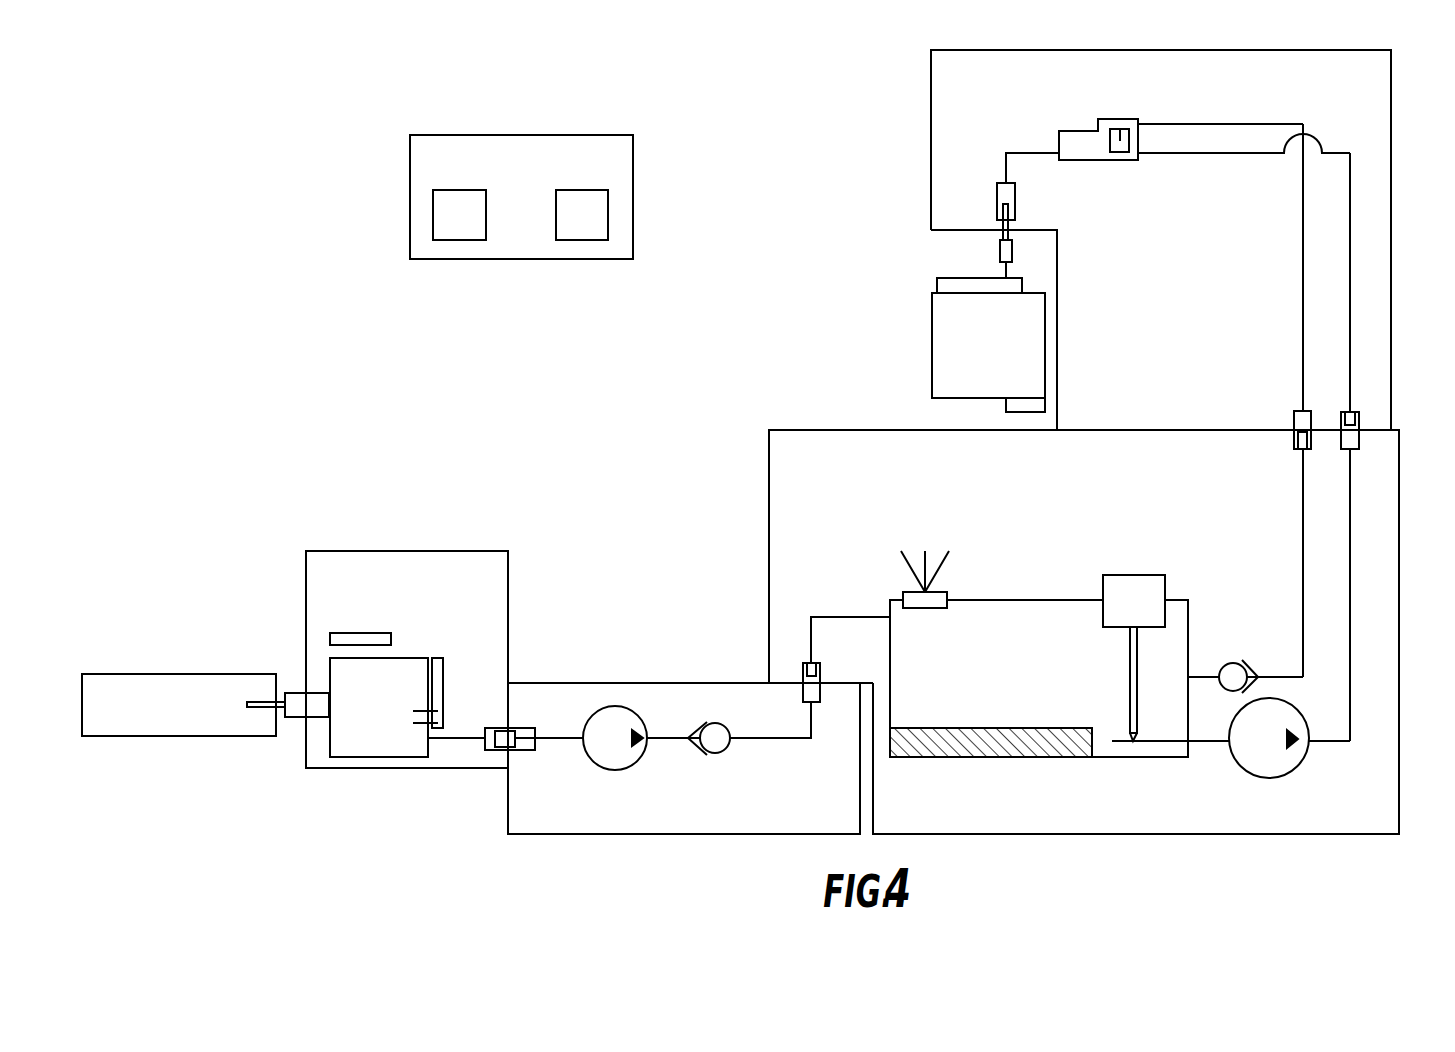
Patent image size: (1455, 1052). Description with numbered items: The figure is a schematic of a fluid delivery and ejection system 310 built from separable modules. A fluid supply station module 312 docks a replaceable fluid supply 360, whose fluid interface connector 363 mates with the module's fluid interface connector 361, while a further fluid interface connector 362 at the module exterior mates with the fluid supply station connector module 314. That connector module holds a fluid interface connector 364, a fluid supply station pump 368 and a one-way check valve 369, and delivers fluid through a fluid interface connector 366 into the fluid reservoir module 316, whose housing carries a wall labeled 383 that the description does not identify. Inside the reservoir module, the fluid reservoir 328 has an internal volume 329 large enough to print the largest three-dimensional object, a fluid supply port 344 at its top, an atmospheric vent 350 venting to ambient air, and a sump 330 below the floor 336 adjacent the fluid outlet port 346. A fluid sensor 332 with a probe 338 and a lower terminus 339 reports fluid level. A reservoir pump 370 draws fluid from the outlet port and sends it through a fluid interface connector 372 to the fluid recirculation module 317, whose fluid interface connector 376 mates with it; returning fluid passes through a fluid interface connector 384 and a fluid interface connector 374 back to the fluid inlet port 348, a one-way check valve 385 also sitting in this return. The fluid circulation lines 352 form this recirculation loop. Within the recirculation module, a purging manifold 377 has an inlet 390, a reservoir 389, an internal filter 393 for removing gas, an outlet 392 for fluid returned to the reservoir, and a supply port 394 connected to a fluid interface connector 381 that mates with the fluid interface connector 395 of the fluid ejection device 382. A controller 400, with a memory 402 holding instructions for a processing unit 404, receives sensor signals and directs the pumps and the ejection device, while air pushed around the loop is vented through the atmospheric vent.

The fluid delivery and ejection system 310 is at (140, 134).
The fluid supply station module 312 is at (407, 616).
The fluid supply station connector module 314 is at (690, 714).
The fluid reservoir module 316 is at (1074, 603).
The fluid recirculation module 317 is at (1161, 215).
The fluid reservoir 328 is at (1039, 628).
The internal volume 329 is at (1010, 594).
The sump 330 is at (1075, 706).
The fluid sensor 332 is at (1134, 563).
The floor 336 is at (991, 759).
The probe 338 is at (1091, 684).
The lower terminus 339 is at (1138, 780).
The fluid supply port 344 is at (892, 578).
The fluid outlet port 346 is at (1190, 784).
The fluid inlet port 348 is at (1210, 632).
The atmospheric vent 350 is at (945, 549).
The fluid circulation lines 352 is at (1287, 432).
The fluid supply 360 is at (183, 668).
The fluid interface connector 361 is at (290, 771).
The fluid interface connector 362 is at (473, 771).
The fluid interface connector 363 is at (266, 739).
The fluid interface connector 364 is at (551, 780).
The fluid interface connector 366 is at (852, 695).
The fluid supply station pump 368 is at (668, 719).
The one-way check valve 369 is at (749, 761).
The reservoir pump 370 is at (1279, 755).
The fluid interface connector 372 is at (1373, 482).
The fluid interface connector 374 is at (1244, 465).
The fluid interface connector 376 is at (1397, 408).
The purging manifold 377 is at (1137, 213).
The fluid interface connector 381 is at (943, 195).
The fluid ejection device 382 is at (944, 345).
The module wall 383 is at (735, 488).
The fluid interface connector 384 is at (1265, 400).
The one-way check valve 385 is at (1319, 371).
The reservoir 389 is at (1084, 114).
The inlet 390 is at (1244, 171).
The outlet 392 is at (1220, 98).
The internal filter 393 is at (1107, 103).
The supply port 394 is at (1014, 142).
The fluid interface connector 395 is at (944, 257).
The controller 400 is at (521, 161).
The memory 402 is at (456, 260).
The processing unit 404 is at (578, 260).